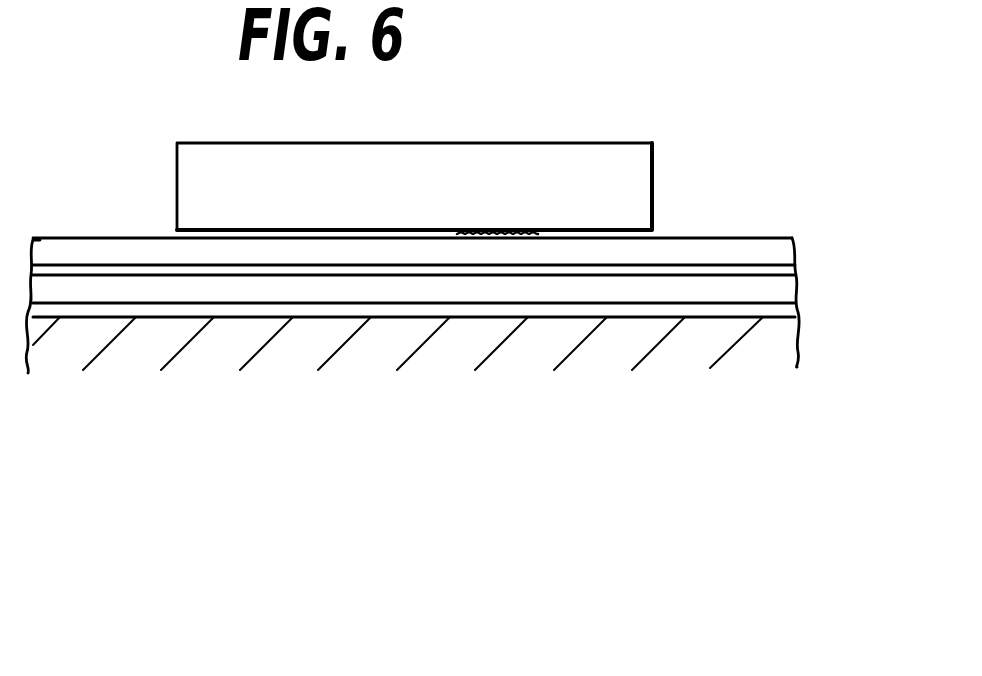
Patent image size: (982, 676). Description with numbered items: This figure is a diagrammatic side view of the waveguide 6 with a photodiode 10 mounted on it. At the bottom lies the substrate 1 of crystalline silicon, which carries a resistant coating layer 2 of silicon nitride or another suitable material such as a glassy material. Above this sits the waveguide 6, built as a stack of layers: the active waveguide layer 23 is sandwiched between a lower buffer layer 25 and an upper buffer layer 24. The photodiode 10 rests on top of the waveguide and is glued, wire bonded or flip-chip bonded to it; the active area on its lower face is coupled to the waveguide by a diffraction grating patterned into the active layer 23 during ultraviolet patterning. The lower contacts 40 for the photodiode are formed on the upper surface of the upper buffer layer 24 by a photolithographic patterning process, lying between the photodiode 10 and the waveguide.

The substrate 1 is at (498, 337).
The resistant coating layer 2 is at (155, 315).
The waveguide 6 is at (118, 252).
The photodiode 10 is at (610, 177).
The active waveguide layer 23 is at (758, 270).
The upper buffer layer 24 is at (707, 248).
The lower buffer layer 25 is at (775, 291).
The lower contacts 40 is at (505, 228).